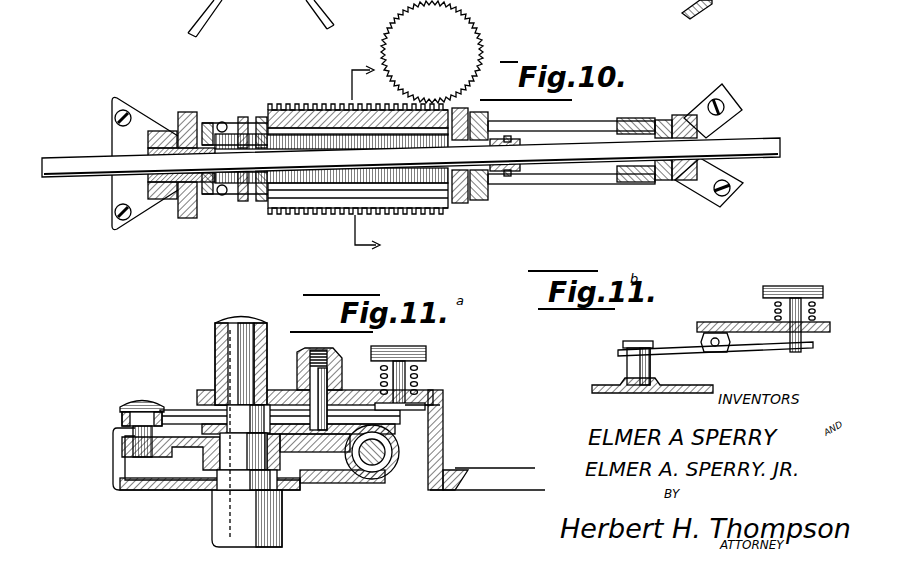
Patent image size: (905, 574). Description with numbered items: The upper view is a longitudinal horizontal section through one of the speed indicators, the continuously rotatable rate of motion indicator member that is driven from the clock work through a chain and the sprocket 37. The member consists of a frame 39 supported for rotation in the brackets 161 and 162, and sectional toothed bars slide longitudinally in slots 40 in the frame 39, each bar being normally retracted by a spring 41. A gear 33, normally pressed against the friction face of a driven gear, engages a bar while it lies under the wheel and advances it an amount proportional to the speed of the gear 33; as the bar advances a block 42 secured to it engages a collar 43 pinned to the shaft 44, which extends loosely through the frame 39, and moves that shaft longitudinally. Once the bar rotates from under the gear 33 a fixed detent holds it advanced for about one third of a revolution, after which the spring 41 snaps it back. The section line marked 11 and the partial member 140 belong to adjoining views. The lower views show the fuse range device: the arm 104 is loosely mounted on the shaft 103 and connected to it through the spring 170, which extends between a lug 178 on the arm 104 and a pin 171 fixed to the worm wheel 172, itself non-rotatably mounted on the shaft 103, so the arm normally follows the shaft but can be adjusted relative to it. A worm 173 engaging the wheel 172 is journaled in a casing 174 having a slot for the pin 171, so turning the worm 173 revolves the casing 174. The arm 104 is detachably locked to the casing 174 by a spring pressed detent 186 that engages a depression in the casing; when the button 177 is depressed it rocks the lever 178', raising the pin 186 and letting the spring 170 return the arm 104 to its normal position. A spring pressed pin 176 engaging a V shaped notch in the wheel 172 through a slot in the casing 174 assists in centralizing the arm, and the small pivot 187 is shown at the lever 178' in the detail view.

In FIG. 10, the section line 11 is at (360, 160).
In FIG. 10, the frame leg 140 is at (262, 4).
In FIG. 10, the gear 33 is at (432, 52).
In FIG. 10, the sprocket 37 is at (190, 110).
In FIG. 10, the frame 39 is at (628, 117).
In FIG. 10, the slots 40 is at (612, 180).
In FIG. 10, the spring 41 is at (405, 176).
In FIG. 10, the block 42 is at (505, 180).
In FIG. 10, the collar 43 is at (508, 134).
In FIG. 10, the shaft 44 is at (750, 140).
In FIG. 10, the bracket 161 is at (166, 193).
In FIG. 10, the bracket 162 is at (684, 185).
In FIG. 11a, the shaft 103 is at (214, 519).
In FIG. 11a, the arm 104 is at (486, 440).
In FIG. 11a, the spring 170 is at (178, 408).
In FIG. 11a, the pin 171 is at (128, 400).
In FIG. 11a, the worm wheel 172 is at (329, 470).
In FIG. 11a, the worm 173 is at (384, 463).
In FIG. 11a, the casing 174 is at (362, 473).
In FIG. 11b, the casing 174 is at (698, 385).
In FIG. 11a, the spring pressed pin 176 is at (318, 386).
In FIG. 11a, the button 177 is at (428, 352).
In FIG. 11b, the button 177 is at (787, 286).
In FIG. 11a, the lug 178 is at (400, 419).
In FIG. 11a, the lever 178' is at (448, 408).
In FIG. 11b, the lever 178' is at (715, 360).
In FIG. 11b, the spring pressed detent 186 is at (628, 362).
In FIG. 11b, the ball joint 187 is at (652, 384).